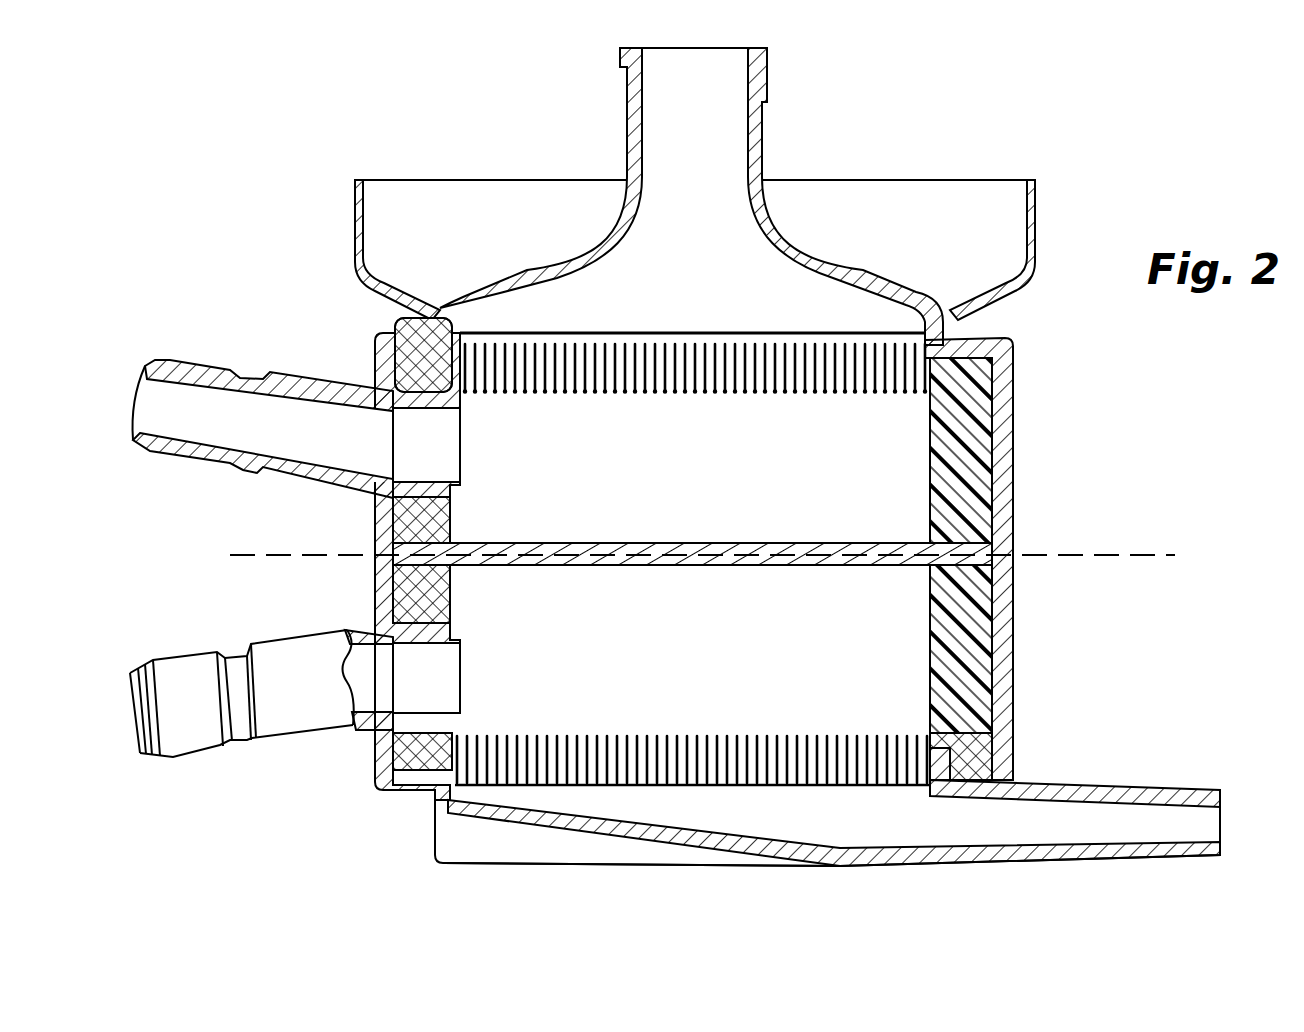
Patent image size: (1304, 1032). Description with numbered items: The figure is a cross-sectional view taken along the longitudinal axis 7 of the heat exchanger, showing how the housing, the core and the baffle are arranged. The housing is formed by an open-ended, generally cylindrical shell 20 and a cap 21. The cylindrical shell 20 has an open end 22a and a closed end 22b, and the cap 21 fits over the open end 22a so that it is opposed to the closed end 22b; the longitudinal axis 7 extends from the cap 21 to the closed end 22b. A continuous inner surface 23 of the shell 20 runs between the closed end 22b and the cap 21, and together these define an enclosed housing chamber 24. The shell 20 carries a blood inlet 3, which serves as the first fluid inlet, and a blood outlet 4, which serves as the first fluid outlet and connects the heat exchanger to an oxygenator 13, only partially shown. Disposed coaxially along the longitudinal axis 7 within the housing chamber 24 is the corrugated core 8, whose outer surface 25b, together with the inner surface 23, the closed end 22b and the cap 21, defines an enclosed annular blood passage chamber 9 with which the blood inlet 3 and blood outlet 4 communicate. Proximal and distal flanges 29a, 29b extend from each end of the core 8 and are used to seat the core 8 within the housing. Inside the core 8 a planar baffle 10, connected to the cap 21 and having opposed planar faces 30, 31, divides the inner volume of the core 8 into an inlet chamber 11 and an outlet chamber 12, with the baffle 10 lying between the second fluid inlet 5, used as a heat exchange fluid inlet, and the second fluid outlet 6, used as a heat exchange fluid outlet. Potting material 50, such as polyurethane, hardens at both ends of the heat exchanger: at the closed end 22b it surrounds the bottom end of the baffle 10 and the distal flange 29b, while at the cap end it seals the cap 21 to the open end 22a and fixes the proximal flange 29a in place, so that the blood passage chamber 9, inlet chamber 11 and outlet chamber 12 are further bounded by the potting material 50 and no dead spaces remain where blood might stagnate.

The blood inlet 3 is at (1202, 790).
The blood outlet 4 is at (618, 104).
The second fluid inlet 5 is at (182, 356).
The second fluid outlet 6 is at (190, 760).
The longitudinal axis 7 is at (1176, 556).
The core 8 is at (936, 754).
The annular blood passage chamber 9 is at (530, 797).
The baffle 10 is at (720, 541).
The inlet chamber 11 is at (839, 442).
The outlet chamber 12 is at (837, 657).
The oxygenator 13 is at (356, 186).
The cylindrical shell 20 is at (1028, 350).
The cap 21 is at (368, 606).
The open end 22a is at (417, 342).
The closed end 22b is at (1018, 388).
The inner surface 23 is at (608, 821).
The housing chamber 24 is at (908, 477).
The outer surface 25b is at (708, 787).
The proximal flange 29a is at (376, 767).
The distal flange 29b is at (946, 730).
The planar face 30 is at (569, 541).
The planar face 31 is at (570, 568).
The potting material 50 is at (422, 509).